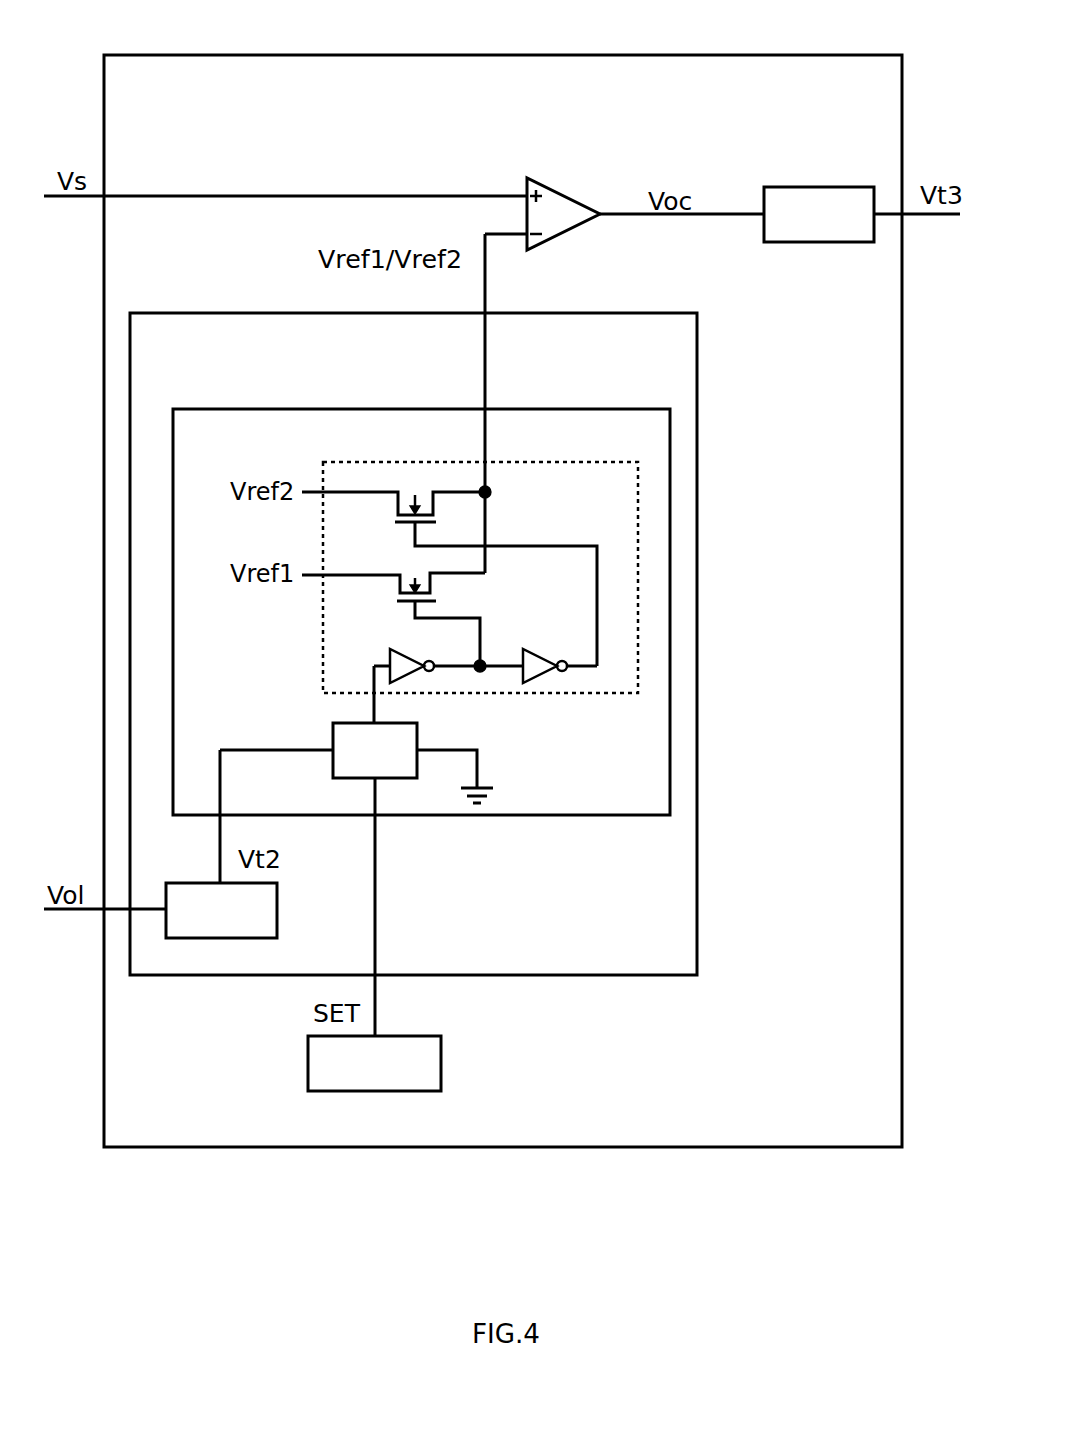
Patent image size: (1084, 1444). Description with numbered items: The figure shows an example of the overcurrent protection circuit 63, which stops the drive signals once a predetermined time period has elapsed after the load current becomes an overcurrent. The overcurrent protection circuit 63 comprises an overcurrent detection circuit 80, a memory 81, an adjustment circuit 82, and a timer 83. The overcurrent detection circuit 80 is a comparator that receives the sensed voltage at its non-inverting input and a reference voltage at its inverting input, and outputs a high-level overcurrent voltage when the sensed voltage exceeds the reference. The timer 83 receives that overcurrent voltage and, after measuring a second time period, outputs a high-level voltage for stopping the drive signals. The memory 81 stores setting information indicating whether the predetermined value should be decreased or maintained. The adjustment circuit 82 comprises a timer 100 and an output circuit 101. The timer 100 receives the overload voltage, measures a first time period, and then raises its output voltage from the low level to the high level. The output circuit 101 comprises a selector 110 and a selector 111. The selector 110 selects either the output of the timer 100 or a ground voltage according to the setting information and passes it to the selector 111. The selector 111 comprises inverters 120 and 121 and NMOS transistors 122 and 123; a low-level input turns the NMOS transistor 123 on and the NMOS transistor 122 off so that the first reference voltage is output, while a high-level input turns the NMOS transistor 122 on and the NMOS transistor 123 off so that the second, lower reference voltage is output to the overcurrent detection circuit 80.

The overcurrent protection circuit 63 is at (205, 55).
The overcurrent detection circuit 80 is at (545, 178).
The memory 81 is at (441, 1036).
The adjustment circuit 82 is at (244, 313).
The timer 83 is at (766, 242).
The timer 100 is at (168, 883).
The output circuit 101 is at (305, 409).
The selector 110 is at (333, 723).
The selector 111 is at (440, 462).
The inverter 120 is at (390, 666).
The inverter 121 is at (523, 654).
The NMOS transistor 122 is at (396, 522).
The NMOS transistor 123 is at (397, 598).